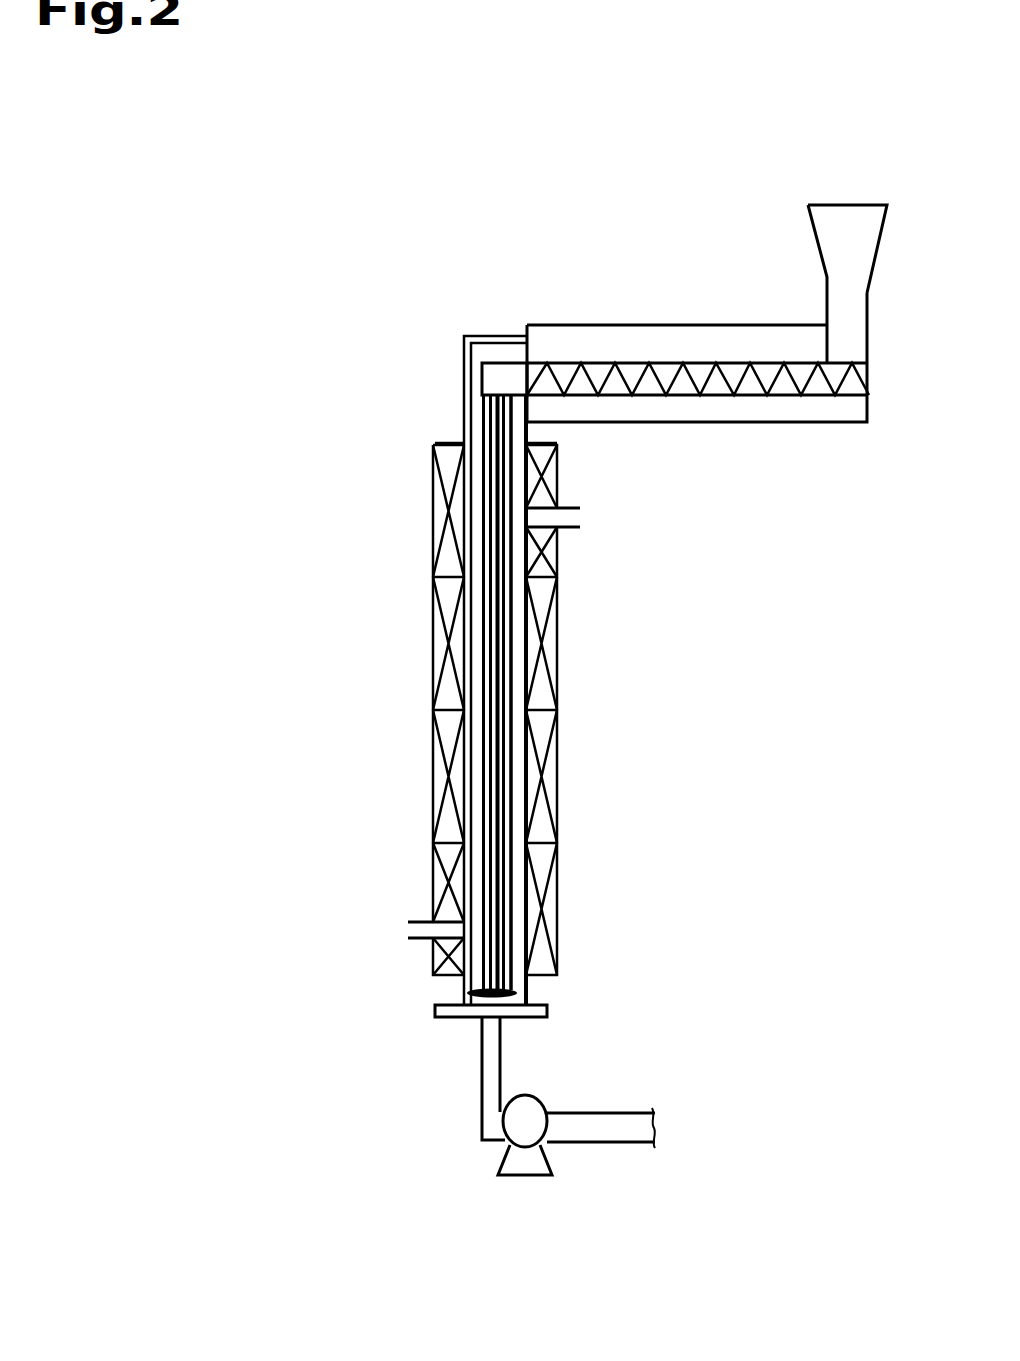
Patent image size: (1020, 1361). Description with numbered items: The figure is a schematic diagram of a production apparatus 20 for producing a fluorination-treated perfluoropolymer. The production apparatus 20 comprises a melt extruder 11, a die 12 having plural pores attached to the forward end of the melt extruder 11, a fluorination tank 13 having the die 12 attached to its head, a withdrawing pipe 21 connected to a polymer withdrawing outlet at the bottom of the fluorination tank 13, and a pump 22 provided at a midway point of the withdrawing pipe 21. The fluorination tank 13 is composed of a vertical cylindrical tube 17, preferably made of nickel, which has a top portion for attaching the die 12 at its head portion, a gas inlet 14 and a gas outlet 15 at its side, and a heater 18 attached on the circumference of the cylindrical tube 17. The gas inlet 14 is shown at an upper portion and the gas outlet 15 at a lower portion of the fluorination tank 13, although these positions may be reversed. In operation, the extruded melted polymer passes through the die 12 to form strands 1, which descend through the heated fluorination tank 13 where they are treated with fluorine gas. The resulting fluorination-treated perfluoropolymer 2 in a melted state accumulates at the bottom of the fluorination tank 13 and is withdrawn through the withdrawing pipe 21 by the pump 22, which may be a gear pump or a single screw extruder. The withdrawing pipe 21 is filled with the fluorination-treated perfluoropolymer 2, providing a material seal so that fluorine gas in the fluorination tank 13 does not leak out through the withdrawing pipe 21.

The production apparatus 20 is at (388, 190).
The melt extruder 11 is at (675, 325).
The die 12 is at (498, 362).
The cylindrical tube 17 is at (463, 397).
The fluorination tank 13 is at (556, 598).
The heater 18 is at (433, 670).
The gas inlet 14 is at (572, 508).
The gas outlet 15 is at (420, 920).
The strands 1 is at (510, 878).
The fluorination-treated perfluoropolymer 2 is at (518, 977).
The withdrawing pipe 21 is at (502, 1058).
The pump 22 is at (533, 1178).